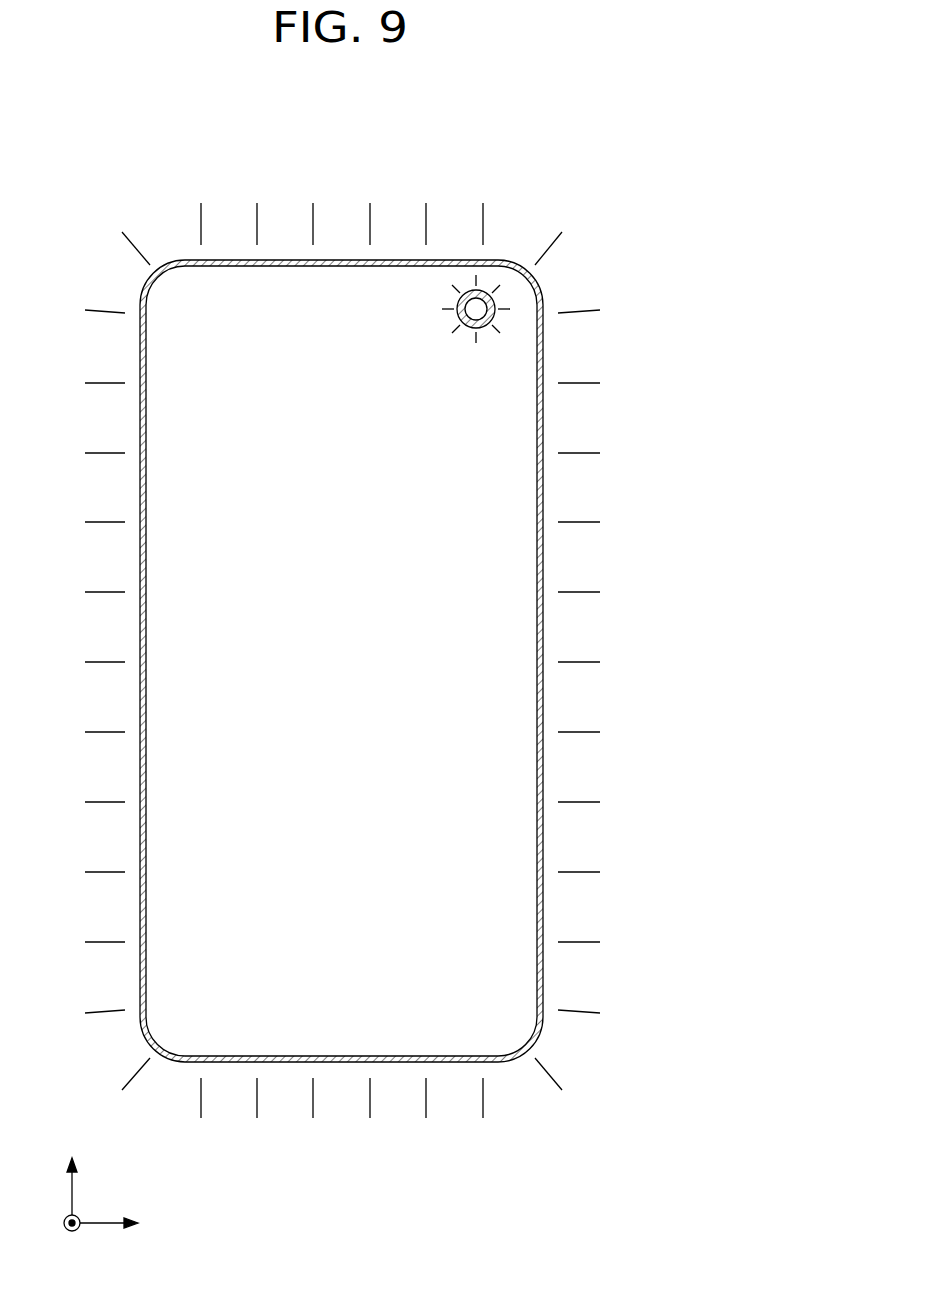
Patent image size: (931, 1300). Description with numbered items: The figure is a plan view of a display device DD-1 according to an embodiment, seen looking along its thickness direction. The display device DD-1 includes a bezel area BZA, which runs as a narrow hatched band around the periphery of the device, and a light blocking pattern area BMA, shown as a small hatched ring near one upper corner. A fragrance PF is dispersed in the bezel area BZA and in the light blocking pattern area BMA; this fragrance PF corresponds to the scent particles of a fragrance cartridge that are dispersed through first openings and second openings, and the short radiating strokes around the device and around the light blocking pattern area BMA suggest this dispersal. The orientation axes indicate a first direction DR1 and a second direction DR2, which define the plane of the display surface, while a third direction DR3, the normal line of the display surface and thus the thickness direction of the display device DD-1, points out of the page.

The display device DD-1 is at (582, 142).
The fragrance PF is at (547, 246).
The bezel area BZA is at (211, 266).
The light blocking pattern area BMA is at (469, 291).
The first direction DR1 is at (128, 1224).
The second direction DR2 is at (70, 1174).
The third direction DR3 is at (70, 1238).